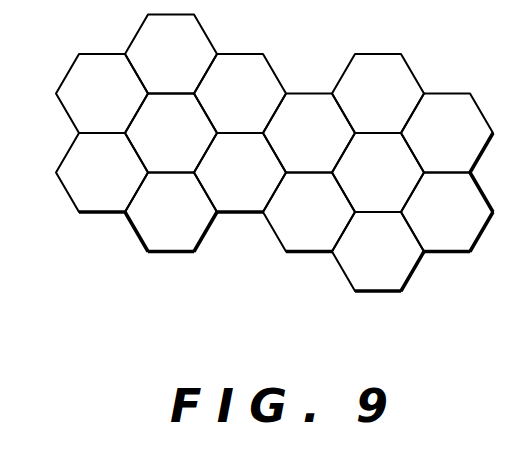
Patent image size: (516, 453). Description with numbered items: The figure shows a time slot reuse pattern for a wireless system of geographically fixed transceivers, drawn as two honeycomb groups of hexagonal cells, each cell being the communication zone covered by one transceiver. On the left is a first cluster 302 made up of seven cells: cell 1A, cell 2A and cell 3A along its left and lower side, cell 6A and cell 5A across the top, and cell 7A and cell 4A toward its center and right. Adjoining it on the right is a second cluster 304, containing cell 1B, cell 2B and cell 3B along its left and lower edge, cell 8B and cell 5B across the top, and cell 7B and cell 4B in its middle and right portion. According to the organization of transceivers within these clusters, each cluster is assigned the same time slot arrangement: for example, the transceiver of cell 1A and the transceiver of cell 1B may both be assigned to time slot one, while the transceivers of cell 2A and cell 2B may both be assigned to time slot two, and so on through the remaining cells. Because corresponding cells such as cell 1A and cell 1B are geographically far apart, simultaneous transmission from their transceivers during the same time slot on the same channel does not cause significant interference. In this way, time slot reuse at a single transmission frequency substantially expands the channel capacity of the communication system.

The first cluster 302 is at (154, 133).
The second cluster 304 is at (378, 172).
The cell 1A is at (102, 93).
The cell 6A is at (171, 54).
The cell 5A is at (240, 93).
The cell 7A is at (171, 133).
The cell 2A is at (102, 172).
The cell 4A is at (240, 172).
The cell 3A is at (171, 212).
The cell 1B is at (309, 133).
The hexagonal cell 8B is at (378, 93).
The cell 5B is at (447, 133).
The cell 7B is at (378, 172).
The cell 2B is at (309, 212).
The cell 4B is at (447, 212).
The cell 3B is at (378, 251).